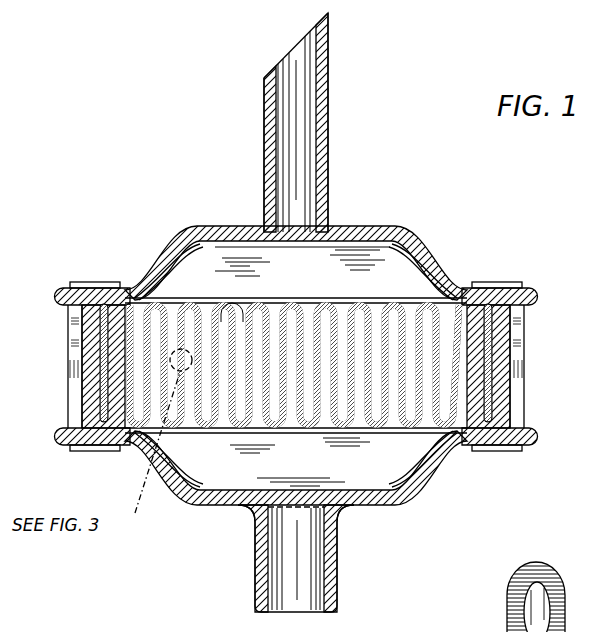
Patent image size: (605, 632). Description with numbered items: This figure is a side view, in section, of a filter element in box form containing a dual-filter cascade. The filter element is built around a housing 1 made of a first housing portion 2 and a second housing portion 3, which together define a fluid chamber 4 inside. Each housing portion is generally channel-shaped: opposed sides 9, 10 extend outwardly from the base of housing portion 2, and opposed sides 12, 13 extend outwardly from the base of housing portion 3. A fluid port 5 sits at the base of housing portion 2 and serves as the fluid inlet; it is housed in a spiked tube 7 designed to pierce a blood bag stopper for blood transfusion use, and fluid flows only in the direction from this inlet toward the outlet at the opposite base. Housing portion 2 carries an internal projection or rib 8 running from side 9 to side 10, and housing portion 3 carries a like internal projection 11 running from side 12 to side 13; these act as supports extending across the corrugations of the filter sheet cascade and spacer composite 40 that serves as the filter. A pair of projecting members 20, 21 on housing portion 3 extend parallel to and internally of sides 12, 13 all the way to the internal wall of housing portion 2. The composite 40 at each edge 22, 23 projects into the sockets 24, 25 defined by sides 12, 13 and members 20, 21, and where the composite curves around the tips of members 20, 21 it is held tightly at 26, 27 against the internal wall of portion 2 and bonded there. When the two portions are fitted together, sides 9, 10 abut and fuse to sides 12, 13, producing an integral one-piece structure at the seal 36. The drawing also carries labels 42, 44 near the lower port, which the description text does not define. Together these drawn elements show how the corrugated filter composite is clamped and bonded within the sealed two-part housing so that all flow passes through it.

The housing 1 is at (452, 250).
The first housing portion 2 is at (537, 292).
The second housing portion 3 is at (537, 437).
The fluid chamber 4 is at (378, 307).
The fluid port 5 is at (297, 44).
The spiked tube 7 is at (330, 108).
The internal projection or rib 8 is at (303, 280).
The side 9 is at (72, 332).
The side 10 is at (522, 320).
The internal projection 11 is at (307, 470).
The side 12 is at (85, 369).
The side 13 is at (504, 374).
The projecting member 20 is at (119, 418).
The projecting member 21 is at (469, 432).
The edge 22 is at (84, 394).
The edge 23 is at (492, 407).
The socket 24 is at (58, 436).
The socket 25 is at (508, 446).
The bonding location on internal wall 26 is at (99, 290).
The bonding location on internal wall 27 is at (481, 296).
The seal 36 is at (522, 343).
The filter sheet cascade and spacer composite 40 is at (227, 307).
The outlet stem 42 is at (312, 631).
The outlet passage 44 is at (229, 569).